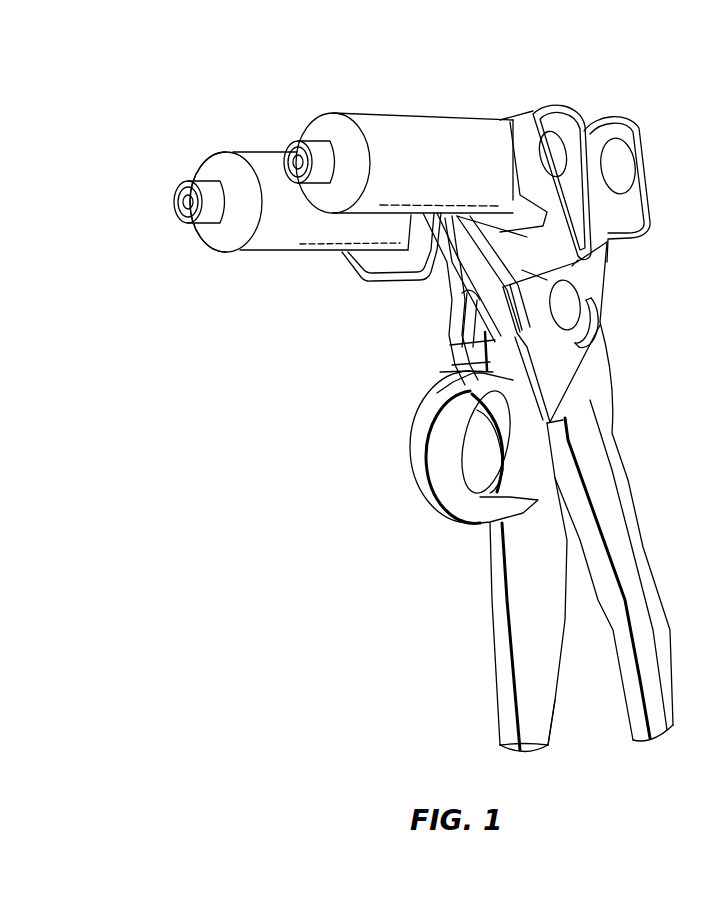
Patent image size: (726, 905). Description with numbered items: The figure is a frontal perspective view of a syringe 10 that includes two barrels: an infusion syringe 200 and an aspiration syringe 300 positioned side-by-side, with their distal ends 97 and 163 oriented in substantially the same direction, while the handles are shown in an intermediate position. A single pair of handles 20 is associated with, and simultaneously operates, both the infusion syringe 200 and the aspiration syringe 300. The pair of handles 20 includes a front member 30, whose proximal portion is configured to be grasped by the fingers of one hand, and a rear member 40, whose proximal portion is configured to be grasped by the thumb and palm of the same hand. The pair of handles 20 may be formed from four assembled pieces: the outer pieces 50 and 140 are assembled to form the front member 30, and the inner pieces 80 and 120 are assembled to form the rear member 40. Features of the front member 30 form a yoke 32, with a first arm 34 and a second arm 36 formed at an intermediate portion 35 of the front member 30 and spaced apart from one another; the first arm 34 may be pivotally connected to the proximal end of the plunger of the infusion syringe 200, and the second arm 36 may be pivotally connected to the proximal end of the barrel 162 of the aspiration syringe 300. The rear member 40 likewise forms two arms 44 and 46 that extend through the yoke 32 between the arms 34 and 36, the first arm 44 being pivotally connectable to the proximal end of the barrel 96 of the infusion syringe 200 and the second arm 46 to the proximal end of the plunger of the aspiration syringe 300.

The syringe 10 is at (172, 72).
The pair of handles 20 is at (395, 440).
The front member 30 is at (488, 747).
The yoke 32 is at (467, 370).
The first arm 34 is at (535, 306).
The intermediate portion 35 is at (614, 326).
The second arm 36 is at (453, 305).
The rear member 40 is at (672, 745).
The first arm 44 is at (520, 326).
The second arm 46 is at (478, 330).
The outer left piece 50 is at (543, 725).
The inner piece 80 is at (652, 625).
The barrel 96 is at (462, 132).
The distal end 97 is at (325, 140).
The inner piece 120 is at (627, 682).
The outer right piece 140 is at (508, 637).
The barrel 162 is at (222, 172).
The distal end 163 is at (182, 185).
The infusion syringe 200 is at (418, 108).
The aspiration syringe 300 is at (253, 140).